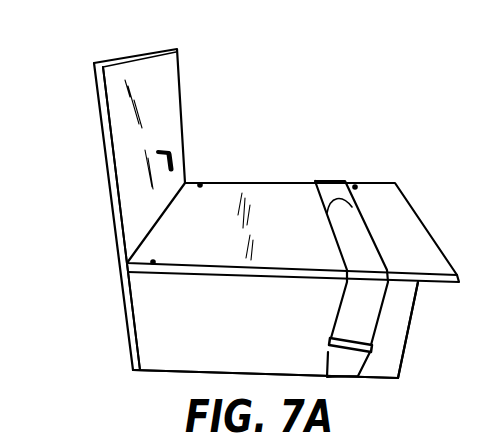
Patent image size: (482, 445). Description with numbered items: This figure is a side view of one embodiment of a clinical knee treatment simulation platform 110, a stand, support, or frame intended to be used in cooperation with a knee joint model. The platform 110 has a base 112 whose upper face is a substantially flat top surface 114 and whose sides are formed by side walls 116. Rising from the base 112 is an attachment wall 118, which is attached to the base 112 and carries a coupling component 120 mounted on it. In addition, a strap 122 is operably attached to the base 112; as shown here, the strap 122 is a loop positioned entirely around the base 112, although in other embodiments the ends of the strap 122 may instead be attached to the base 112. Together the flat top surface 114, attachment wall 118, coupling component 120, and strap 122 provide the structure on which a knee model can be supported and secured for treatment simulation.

The treatment platform 110 is at (92, 54).
The base 112 is at (100, 315).
The top surface 114 is at (257, 178).
The side walls 116 is at (392, 300).
The attachment wall 118 is at (119, 147).
The coupling component 120 is at (168, 150).
The strap 122 is at (353, 237).